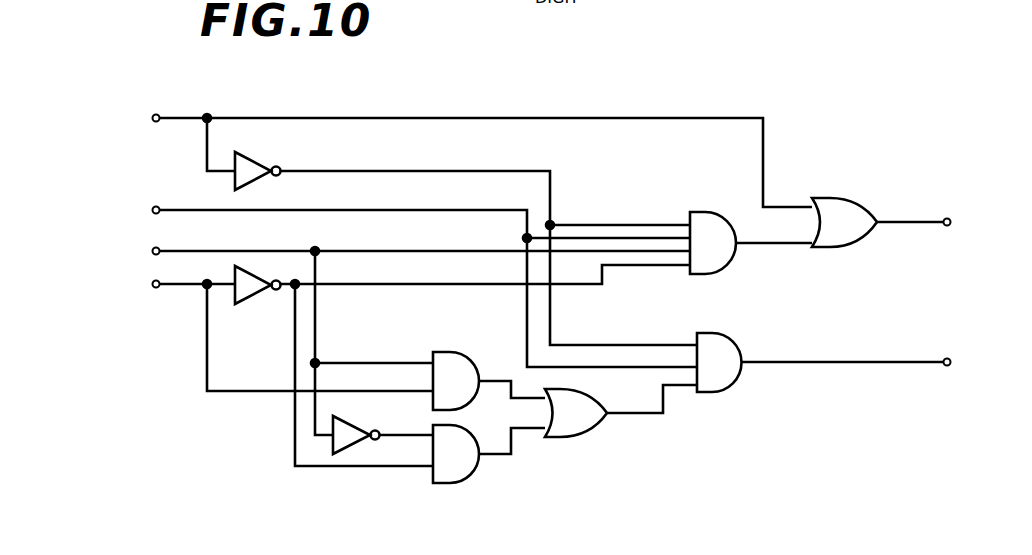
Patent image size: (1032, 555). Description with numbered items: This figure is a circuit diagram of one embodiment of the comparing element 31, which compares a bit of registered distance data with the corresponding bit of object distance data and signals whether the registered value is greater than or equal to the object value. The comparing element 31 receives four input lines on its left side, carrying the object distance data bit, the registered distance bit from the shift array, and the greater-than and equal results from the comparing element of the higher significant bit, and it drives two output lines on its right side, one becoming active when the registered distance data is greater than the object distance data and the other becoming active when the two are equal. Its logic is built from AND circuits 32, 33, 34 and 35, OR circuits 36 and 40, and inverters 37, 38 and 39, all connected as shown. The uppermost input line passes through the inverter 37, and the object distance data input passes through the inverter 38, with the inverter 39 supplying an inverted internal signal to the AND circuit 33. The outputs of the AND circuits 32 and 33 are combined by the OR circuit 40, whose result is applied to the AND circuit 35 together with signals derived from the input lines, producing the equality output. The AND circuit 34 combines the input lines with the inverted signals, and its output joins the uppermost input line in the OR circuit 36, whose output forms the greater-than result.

The comparing element 31 is at (548, 59).
The AND circuit 32 is at (462, 352).
The AND circuit 33 is at (473, 472).
The AND circuit 34 is at (718, 212).
The AND circuit 35 is at (740, 352).
The OR circuit 36 is at (855, 198).
The inverter 37 is at (262, 165).
The inverter 38 is at (250, 302).
The inverter 39 is at (368, 434).
The OR circuit 40 is at (593, 432).